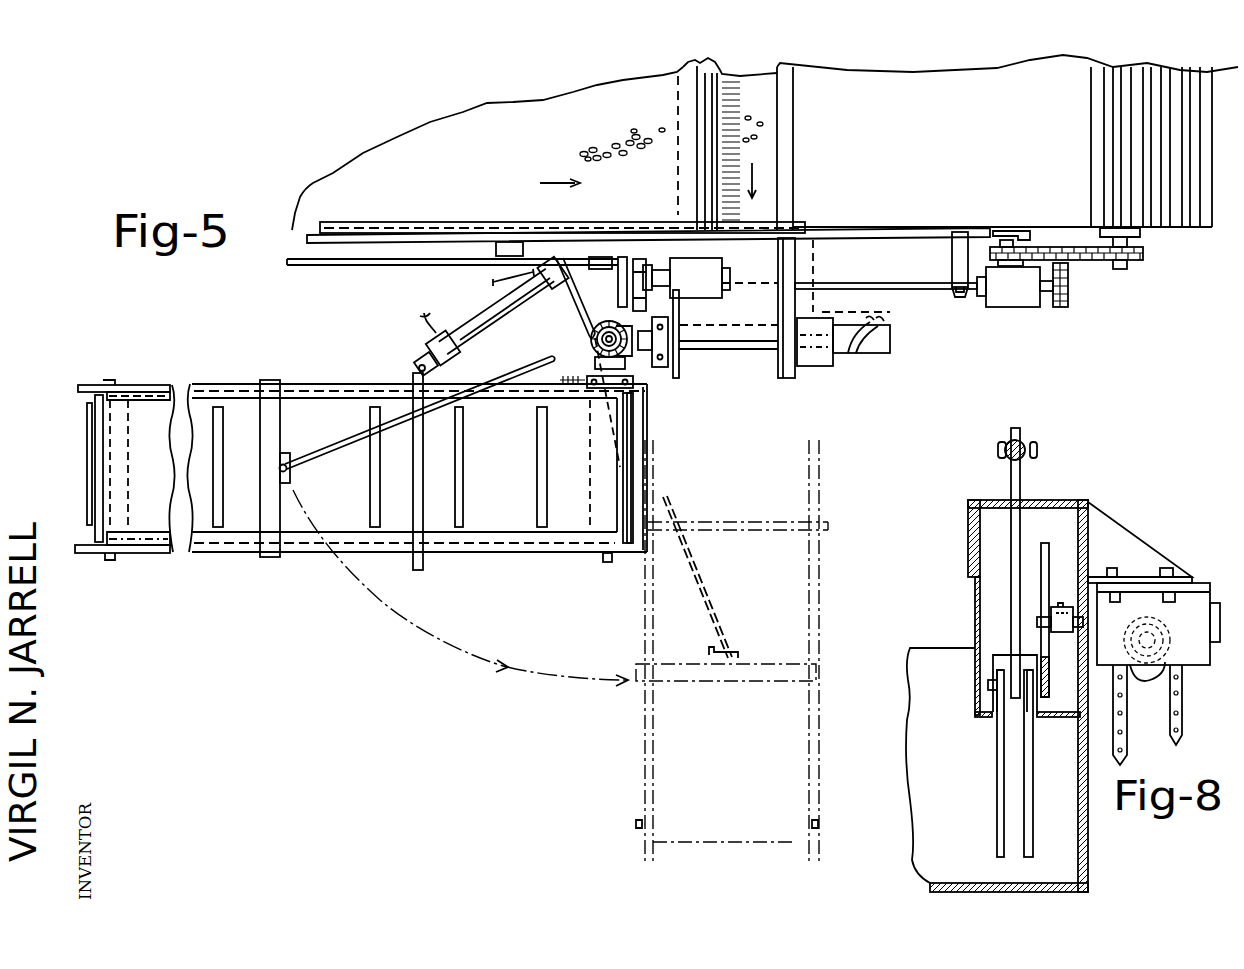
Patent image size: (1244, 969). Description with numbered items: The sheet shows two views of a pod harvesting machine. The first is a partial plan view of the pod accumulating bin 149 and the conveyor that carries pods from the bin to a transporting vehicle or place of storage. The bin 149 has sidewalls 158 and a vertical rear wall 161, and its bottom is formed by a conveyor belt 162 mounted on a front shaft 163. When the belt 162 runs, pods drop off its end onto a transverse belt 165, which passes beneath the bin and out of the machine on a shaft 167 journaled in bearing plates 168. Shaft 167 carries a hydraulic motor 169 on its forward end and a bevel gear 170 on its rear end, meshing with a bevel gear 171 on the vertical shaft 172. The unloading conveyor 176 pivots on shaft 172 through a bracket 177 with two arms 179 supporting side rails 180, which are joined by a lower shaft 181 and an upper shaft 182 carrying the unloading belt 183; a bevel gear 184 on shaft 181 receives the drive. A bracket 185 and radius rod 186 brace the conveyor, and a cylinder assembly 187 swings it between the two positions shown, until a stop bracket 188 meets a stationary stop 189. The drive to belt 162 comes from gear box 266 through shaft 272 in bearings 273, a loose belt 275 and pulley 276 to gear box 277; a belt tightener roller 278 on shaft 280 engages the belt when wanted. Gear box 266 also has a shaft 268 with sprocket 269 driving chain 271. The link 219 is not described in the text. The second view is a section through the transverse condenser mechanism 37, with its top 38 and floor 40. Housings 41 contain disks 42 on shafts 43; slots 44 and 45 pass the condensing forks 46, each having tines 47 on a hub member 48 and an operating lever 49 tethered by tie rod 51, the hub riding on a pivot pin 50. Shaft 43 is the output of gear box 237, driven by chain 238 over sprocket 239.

In FIG. 5, the conveyor belt 162 is at (465, 118).
In FIG. 5, the shaft 163 is at (686, 58).
In FIG. 5, the vertical rear wall 161 is at (794, 166).
In FIG. 5, the sidewalls 158 is at (423, 222).
In FIG. 5, the bin 149 is at (359, 250).
In FIG. 5, the shaft 280 is at (393, 268).
In FIG. 5, the belt 275 is at (648, 247).
In FIG. 5, the pulley 276 is at (638, 247).
In FIG. 5, the gear box 277 is at (713, 269).
In FIG. 5, the transverse belt 165 is at (777, 259).
In FIG. 5, the bearings 273 is at (957, 257).
In FIG. 5, the shaft 272 is at (900, 279).
In FIG. 5, the stop bracket 188 is at (823, 277).
In FIG. 5, the stationary stop 189 is at (864, 320).
In FIG. 5, the gear box 266 is at (1017, 307).
In FIG. 5, the shaft 268 is at (1046, 298).
In FIG. 5, the sprocket 269 is at (1066, 300).
In FIG. 5, the chain 271 is at (1078, 289).
In FIG. 5, the hydraulic motor 169 is at (893, 353).
In FIG. 5, the link arm 219 is at (585, 302).
In FIG. 5, the belt tightener roller 278 is at (590, 320).
In FIG. 5, the bevel gear 171 is at (588, 340).
In FIG. 5, the vertical shaft 172 is at (593, 357).
In FIG. 5, the bevel gear 184 is at (640, 371).
In FIG. 5, the bevel gear 170 is at (647, 330).
In FIG. 5, the shaft 167 is at (643, 340).
In FIG. 5, the bearing plates 168 is at (785, 363).
In FIG. 5, the cylinder assembly 187 is at (477, 305).
In FIG. 5, the unloading conveyor 176 is at (228, 384).
In FIG. 5, the side rails 180 is at (333, 385).
In FIG. 5, the bracket 177 is at (513, 553).
In FIG. 5, the unloading belt 183 is at (252, 523).
In FIG. 5, the upper shaft 182 is at (108, 556).
In FIG. 5, the bracket 185 is at (270, 423).
In FIG. 5, the radius rod 186 is at (353, 447).
In FIG. 5, the arms 179 is at (453, 377).
In FIG. 5, the lower shaft 181 is at (607, 562).
In FIG. 8, the transverse condenser mechanism 37 is at (940, 639).
In FIG. 8, the slot 44 is at (1007, 500).
In FIG. 8, the operating lever 49 is at (1012, 530).
In FIG. 8, the top 38 is at (1055, 500).
In FIG. 8, the floor 40 is at (955, 884).
In FIG. 8, the slot 45 is at (992, 717).
In FIG. 8, the condensing forks 46 is at (1012, 593).
In FIG. 8, the tie rod 51 is at (1033, 442).
In FIG. 8, the disks 42 is at (1043, 545).
In FIG. 8, the shafts 43 is at (1080, 620).
In FIG. 8, the pivot pin 50 is at (990, 685).
In FIG. 8, the tines 47 is at (1023, 768).
In FIG. 8, the hub member 48 is at (1013, 722).
In FIG. 8, the housings 41 is at (1088, 557).
In FIG. 8, the gear box 237 is at (1190, 601).
In FIG. 8, the sprocket 239 is at (1182, 675).
In FIG. 8, the chain 238 is at (1183, 741).